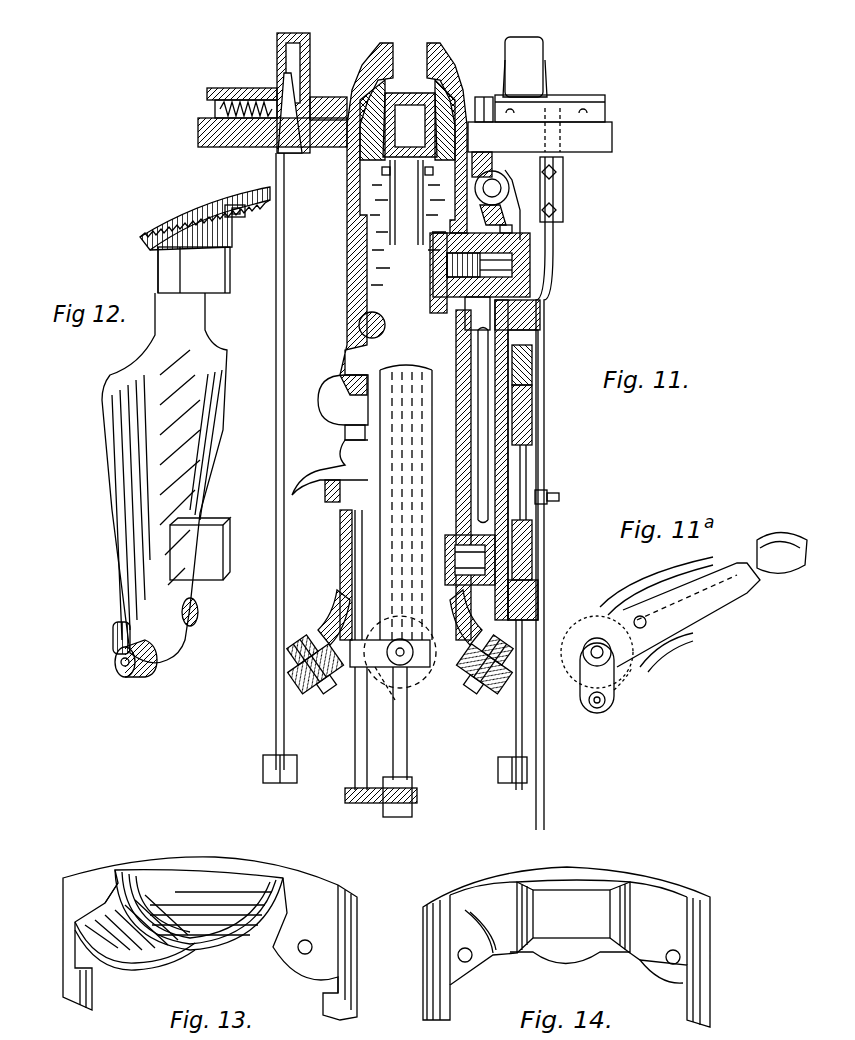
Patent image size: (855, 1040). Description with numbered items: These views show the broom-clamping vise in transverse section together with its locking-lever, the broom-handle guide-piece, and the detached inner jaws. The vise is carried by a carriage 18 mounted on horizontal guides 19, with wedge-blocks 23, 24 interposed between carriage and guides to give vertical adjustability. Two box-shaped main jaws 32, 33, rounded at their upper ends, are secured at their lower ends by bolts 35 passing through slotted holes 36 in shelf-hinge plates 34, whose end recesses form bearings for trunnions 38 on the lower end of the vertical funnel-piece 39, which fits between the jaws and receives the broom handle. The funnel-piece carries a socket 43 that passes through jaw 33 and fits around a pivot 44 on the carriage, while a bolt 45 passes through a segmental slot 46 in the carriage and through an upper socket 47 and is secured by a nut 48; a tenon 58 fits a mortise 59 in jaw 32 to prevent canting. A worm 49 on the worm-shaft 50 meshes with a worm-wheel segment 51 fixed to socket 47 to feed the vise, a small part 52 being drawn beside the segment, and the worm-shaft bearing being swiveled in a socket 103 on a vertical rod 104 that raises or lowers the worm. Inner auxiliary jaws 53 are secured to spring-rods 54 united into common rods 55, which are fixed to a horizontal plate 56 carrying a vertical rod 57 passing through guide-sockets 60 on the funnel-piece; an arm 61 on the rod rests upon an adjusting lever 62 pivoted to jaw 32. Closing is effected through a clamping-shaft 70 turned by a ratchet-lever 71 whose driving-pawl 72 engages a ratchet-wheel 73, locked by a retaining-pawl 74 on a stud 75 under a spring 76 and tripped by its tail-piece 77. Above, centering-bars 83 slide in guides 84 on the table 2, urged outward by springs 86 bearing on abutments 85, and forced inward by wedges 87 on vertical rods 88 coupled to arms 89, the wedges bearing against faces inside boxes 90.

In FIG. 11, the upper table 2 is at (263, 132).
In FIG. 11, the carriage 18 is at (508, 311).
In FIG. 11, the guides 19 is at (540, 383).
In FIG. 11, the wedge-block 23 is at (540, 353).
In FIG. 11, the wedge-block 24 is at (540, 598).
In FIG. 11, the main jaw 32 is at (347, 268).
In FIG. 11, the main jaw 33 is at (472, 475).
In FIG. 11, the shelf-hinge plate 34 is at (291, 669).
In FIG. 11, the bolt 35 is at (411, 627).
In FIG. 11, the slotted hole 36 is at (401, 673).
In FIG. 11, the trunnion 38 is at (380, 683).
In FIG. 12, the trunnion 38 is at (164, 646).
In FIG. 11, the funnel-piece 39 is at (406, 502).
In FIG. 12, the funnel-piece 39 is at (106, 451).
In FIG. 11, the socket 43 is at (470, 548).
In FIG. 12, the socket 43 is at (219, 541).
In FIG. 11, the pivot 44 is at (470, 560).
In FIG. 11, the bolt 45 is at (479, 265).
In FIG. 11, the segmental slot 46 is at (481, 318).
In FIG. 11, the socket 47 is at (481, 265).
In FIG. 12, the socket 47 is at (194, 270).
In FIG. 11, the nut 48 is at (430, 266).
In FIG. 11, the worm 49 is at (492, 176).
In FIG. 11, the worm-shaft 50 is at (511, 197).
In FIG. 11, the worm-wheel segment 51 is at (503, 212).
In FIG. 12, the worm-wheel segment 51 is at (205, 218).
In FIG. 11, the pawl 52 is at (517, 228).
In FIG. 12, the pawl 52 is at (248, 216).
In FIG. 11, the auxiliary jaw 53 is at (427, 96).
In FIG. 13, the auxiliary jaw 53 is at (210, 928).
In FIG. 14, the auxiliary jaw 53 is at (566, 934).
In FIG. 11, the spring-rod 54 is at (400, 216).
In FIG. 11, the common rod 55 is at (413, 723).
In FIG. 11, the horizontal plate 56 is at (395, 797).
In FIG. 11, the vertical rod 57 is at (345, 728).
In FIG. 11, the tenon 58 is at (343, 417).
In FIG. 11, the mortise 59 is at (341, 370).
In FIG. 11, the guide-socket 60 is at (340, 556).
In FIG. 12, the guide-socket 60 is at (108, 639).
In FIG. 11, the arm 61 is at (330, 467).
In FIG. 11, the supporting and adjusting lever 62 is at (331, 506).
In FIG. 11, the clamping-shaft 70 is at (359, 326).
In FIG. 11A, the ratchet-lever 71 is at (712, 600).
In FIG. 11A, the driving-pawl 72 is at (656, 586).
In FIG. 11A, the ratchet-wheel 73 is at (591, 664).
In FIG. 11A, the retaining-pawl 74 is at (626, 691).
In FIG. 11A, the stud 75 is at (590, 709).
In FIG. 11A, the spring 76 is at (613, 706).
In FIG. 11A, the tail-piece 77 is at (666, 652).
In FIG. 11, the centering-bar 83 is at (342, 100).
In FIG. 11, the guide 84 is at (406, 110).
In FIG. 11, the abutment 85 is at (290, 113).
In FIG. 11, the spring 86 is at (233, 147).
In FIG. 11, the wedge 87 is at (301, 153).
In FIG. 11, the vertical rod 88 is at (417, 461).
In FIG. 11, the arm 89 is at (395, 782).
In FIG. 11, the box 90 is at (546, 53).
In FIG. 11, the socket 103 is at (563, 199).
In FIG. 11, the vertical rod 104 is at (555, 258).